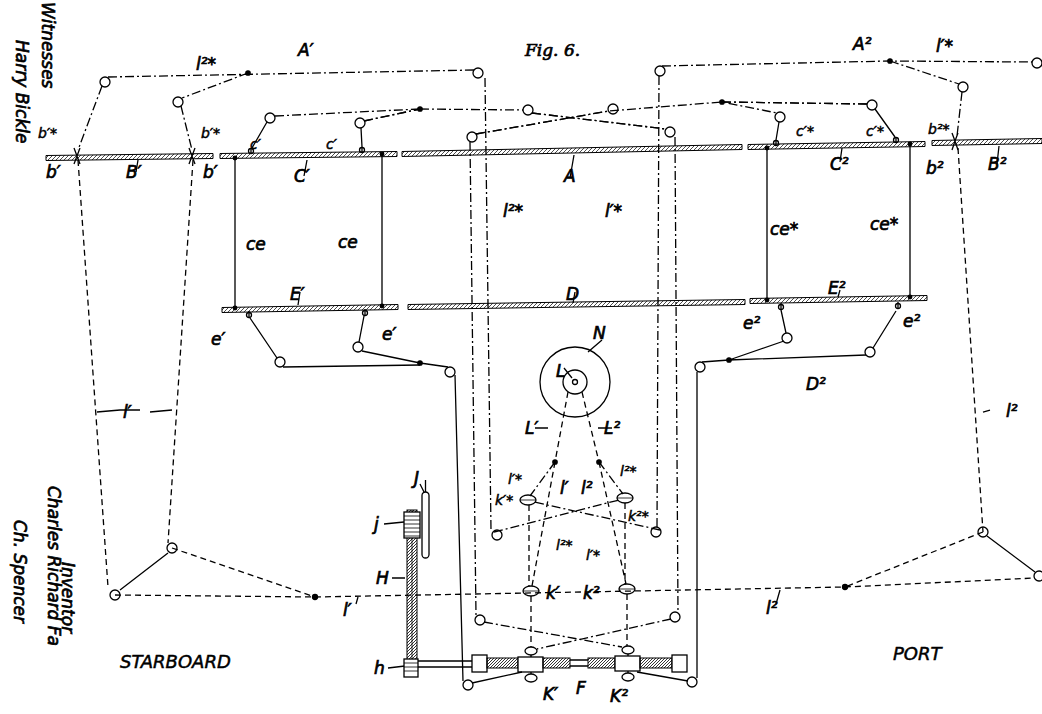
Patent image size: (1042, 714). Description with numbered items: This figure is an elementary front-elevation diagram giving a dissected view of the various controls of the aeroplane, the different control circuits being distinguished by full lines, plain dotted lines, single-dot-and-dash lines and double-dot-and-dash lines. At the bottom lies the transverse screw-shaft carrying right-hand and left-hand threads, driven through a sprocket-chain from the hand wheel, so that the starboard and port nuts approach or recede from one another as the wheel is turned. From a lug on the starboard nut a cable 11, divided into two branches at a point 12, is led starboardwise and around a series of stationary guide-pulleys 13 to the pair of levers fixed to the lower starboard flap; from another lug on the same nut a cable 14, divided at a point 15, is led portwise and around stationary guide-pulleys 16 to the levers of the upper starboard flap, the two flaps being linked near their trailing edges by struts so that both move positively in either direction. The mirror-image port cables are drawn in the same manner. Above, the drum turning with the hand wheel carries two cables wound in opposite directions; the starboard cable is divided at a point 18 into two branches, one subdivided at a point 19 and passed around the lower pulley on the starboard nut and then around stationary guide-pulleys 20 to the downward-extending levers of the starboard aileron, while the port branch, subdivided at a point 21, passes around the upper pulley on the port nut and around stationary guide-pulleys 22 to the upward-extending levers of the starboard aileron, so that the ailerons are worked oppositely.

The cable 11 is at (670, 684).
The division point 12 is at (729, 350).
The stationary guide-pulleys 13 is at (716, 686).
The cable 14 is at (632, 640).
The division point 15 is at (742, 93).
The stationary guide-pulleys 16 is at (680, 633).
The division point 18 is at (608, 460).
The subdivision point 19 is at (850, 576).
The stationary guide-pulleys 20 is at (1010, 566).
The subdivision point 21 is at (890, 75).
The stationary guide-pulleys 22 is at (652, 550).